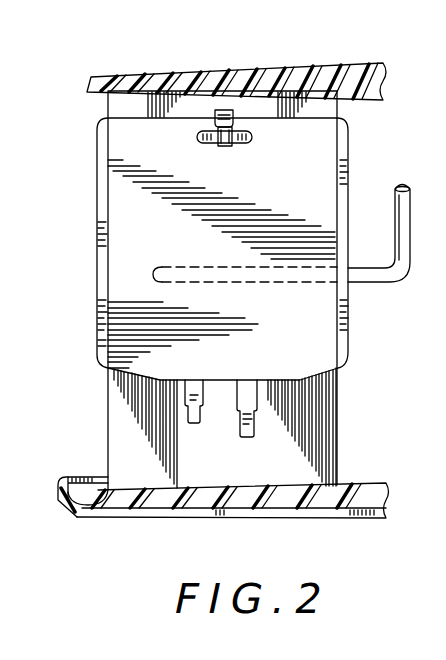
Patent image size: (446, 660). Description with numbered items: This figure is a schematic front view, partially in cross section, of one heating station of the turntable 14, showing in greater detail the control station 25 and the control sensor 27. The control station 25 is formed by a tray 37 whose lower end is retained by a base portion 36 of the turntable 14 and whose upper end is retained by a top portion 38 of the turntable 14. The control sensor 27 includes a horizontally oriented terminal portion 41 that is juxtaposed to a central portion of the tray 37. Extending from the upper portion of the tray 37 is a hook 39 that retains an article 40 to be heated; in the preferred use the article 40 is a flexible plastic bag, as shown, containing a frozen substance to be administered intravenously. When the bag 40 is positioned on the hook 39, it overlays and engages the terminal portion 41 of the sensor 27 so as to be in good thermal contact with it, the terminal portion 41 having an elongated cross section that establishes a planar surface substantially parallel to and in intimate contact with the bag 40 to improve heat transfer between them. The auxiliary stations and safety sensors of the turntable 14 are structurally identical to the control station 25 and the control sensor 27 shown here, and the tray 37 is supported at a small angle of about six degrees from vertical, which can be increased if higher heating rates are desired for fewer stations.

The turntable 14 is at (60, 512).
The control station 25 is at (99, 418).
The control sensor 27 is at (401, 287).
The base portion 36 is at (127, 518).
The tray 37 is at (337, 440).
The top portion 38 is at (251, 75).
The hook 39 is at (235, 123).
The article 40 is at (348, 143).
The terminal portion 41 is at (245, 283).